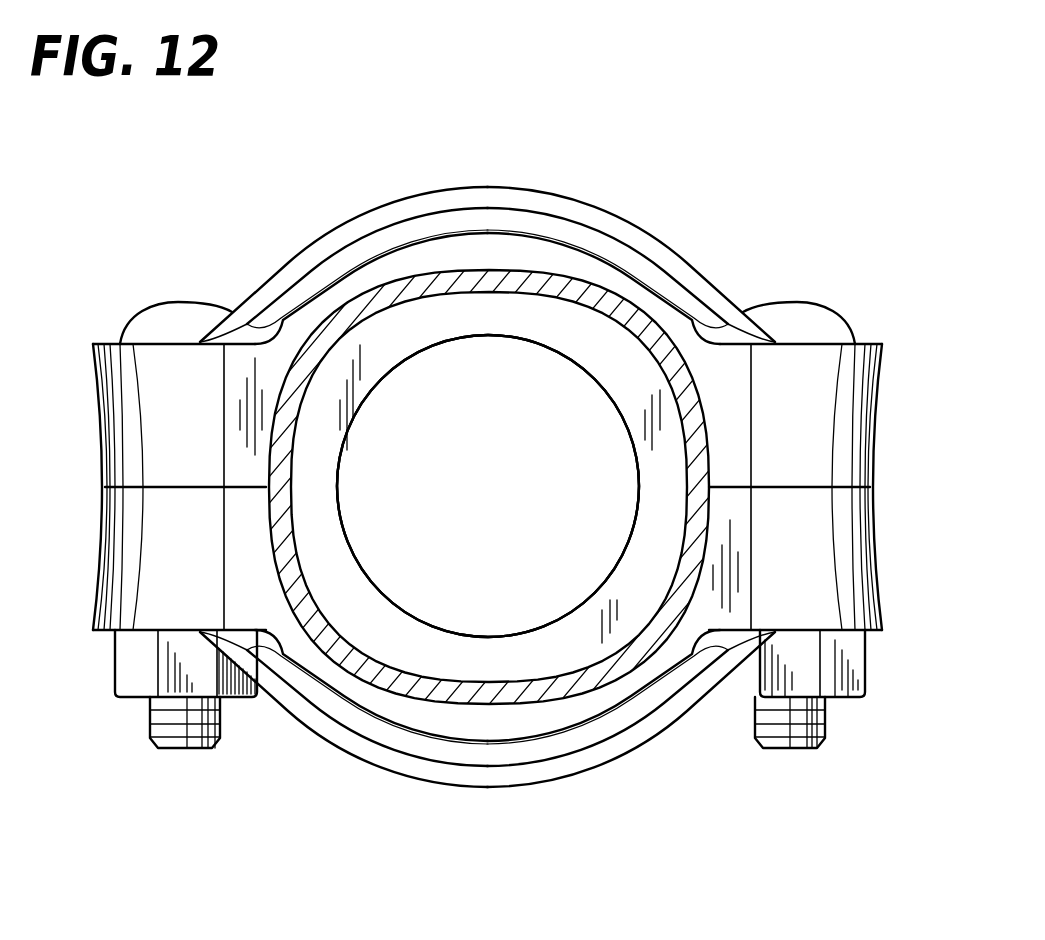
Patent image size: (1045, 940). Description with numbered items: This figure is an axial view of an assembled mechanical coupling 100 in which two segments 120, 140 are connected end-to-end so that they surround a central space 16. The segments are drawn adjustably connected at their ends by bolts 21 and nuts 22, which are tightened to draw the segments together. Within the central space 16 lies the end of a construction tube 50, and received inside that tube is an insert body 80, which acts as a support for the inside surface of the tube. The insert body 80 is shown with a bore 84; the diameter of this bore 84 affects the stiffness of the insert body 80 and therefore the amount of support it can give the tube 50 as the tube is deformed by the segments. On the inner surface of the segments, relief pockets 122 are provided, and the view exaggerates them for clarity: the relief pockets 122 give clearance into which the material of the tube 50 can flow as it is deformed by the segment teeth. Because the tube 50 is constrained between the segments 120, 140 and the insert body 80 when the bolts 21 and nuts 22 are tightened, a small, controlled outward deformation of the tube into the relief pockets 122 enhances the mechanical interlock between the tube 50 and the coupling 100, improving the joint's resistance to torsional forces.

The coupling 100 is at (697, 207).
The segment 140 is at (440, 190).
The segment 120 is at (573, 777).
The relief pocket 122 is at (703, 393).
The bolt 21 is at (813, 312).
The nut 22 is at (847, 657).
The tube 50 is at (480, 292).
The insert body 80 is at (418, 620).
The central space 16 is at (500, 512).
The bore 84 is at (584, 481).